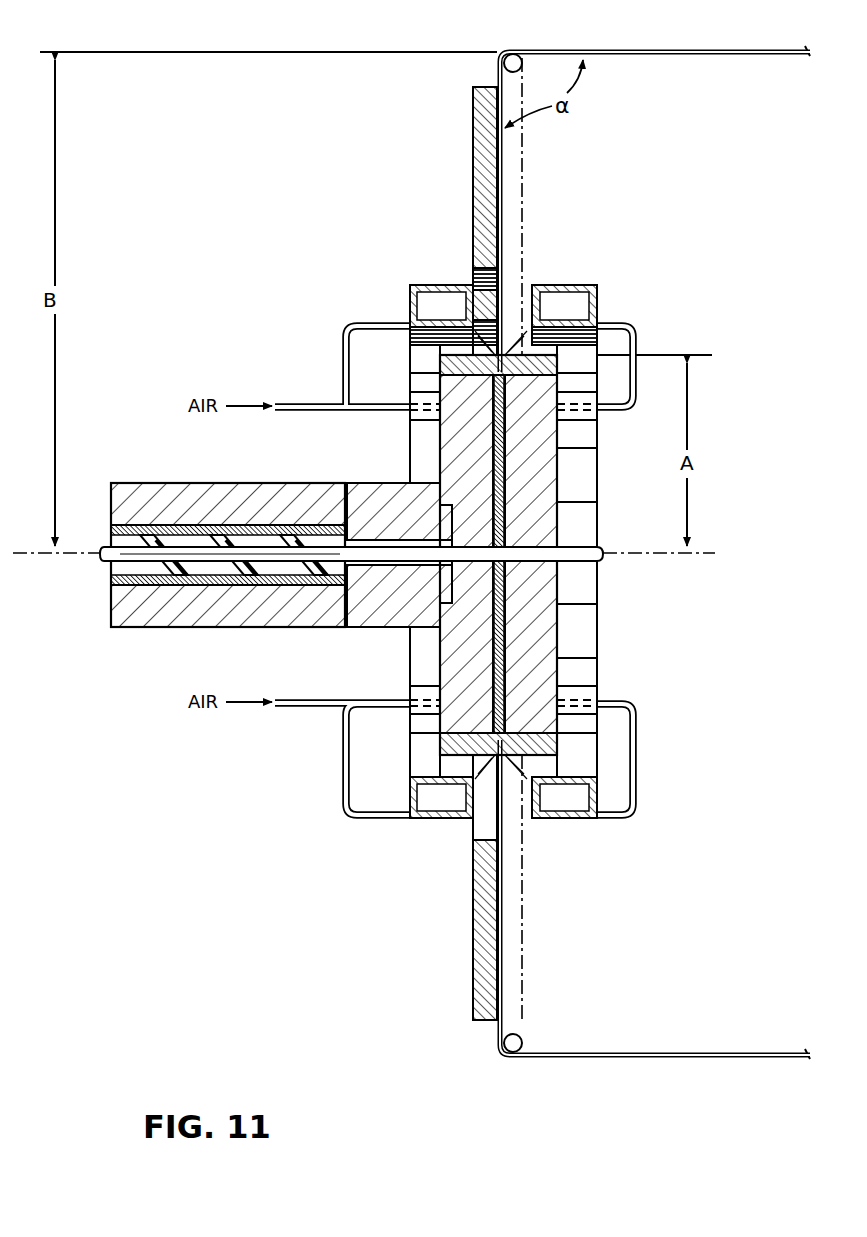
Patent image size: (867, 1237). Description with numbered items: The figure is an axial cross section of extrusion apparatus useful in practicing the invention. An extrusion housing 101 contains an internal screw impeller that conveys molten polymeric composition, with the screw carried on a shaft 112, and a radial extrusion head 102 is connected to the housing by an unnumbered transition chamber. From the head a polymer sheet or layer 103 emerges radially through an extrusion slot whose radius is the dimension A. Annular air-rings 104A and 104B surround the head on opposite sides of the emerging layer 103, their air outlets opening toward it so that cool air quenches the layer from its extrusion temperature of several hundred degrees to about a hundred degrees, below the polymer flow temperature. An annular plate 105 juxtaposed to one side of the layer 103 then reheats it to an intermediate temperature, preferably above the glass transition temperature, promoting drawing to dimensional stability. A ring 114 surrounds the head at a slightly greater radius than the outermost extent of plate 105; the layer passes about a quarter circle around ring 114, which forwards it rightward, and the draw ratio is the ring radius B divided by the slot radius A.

The extrusion housing 101 is at (199, 490).
The radial extrusion head 102 is at (454, 431).
The polymer sheet or layer 103 is at (503, 296).
The annular air-ring 104A is at (557, 303).
The annular air-ring 104B is at (431, 303).
The annular plate 105 is at (473, 140).
The screw shaft 112 is at (102, 561).
The ring 114 is at (517, 54).